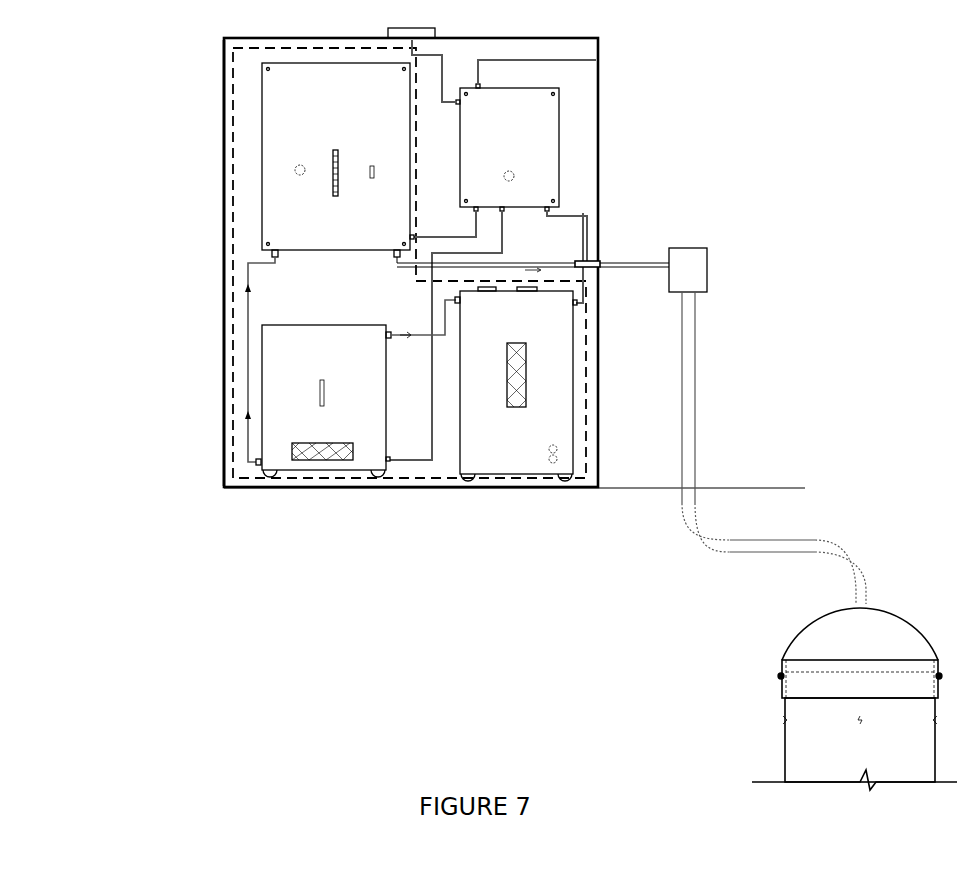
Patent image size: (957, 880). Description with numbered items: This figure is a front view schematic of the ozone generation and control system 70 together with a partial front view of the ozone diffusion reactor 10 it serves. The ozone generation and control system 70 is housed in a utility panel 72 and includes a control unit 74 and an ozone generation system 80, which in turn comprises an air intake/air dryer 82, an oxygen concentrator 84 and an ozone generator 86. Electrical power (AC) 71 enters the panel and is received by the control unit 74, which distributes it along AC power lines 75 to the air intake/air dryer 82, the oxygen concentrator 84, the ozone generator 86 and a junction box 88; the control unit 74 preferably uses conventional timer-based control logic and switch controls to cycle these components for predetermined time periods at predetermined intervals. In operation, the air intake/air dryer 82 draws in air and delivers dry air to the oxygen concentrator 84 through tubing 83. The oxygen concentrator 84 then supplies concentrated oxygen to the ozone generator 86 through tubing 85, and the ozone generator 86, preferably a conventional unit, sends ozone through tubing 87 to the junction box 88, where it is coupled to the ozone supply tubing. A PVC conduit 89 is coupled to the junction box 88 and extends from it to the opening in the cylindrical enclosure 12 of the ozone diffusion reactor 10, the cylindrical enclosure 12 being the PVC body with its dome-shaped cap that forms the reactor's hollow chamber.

The ozone diffusion reactor 10 is at (854, 713).
The cylindrical enclosure 12 is at (803, 633).
The ozone generation and control system 70 is at (222, 165).
The electrical power (AC) 71 is at (567, 60).
The utility panel 72 is at (225, 270).
The control unit 74 is at (548, 145).
The AC power lines 75 is at (420, 237).
The ozone generation system 80 is at (233, 70).
The air intake/air dryer 82 is at (563, 427).
The tubing 83 is at (398, 330).
The oxygen concentrator 84 is at (275, 420).
The tubing 85 is at (248, 358).
The ozone generator 86 is at (330, 75).
The tubing 87 is at (512, 263).
The junction box 88 is at (708, 265).
The PVC conduit 89 is at (698, 440).